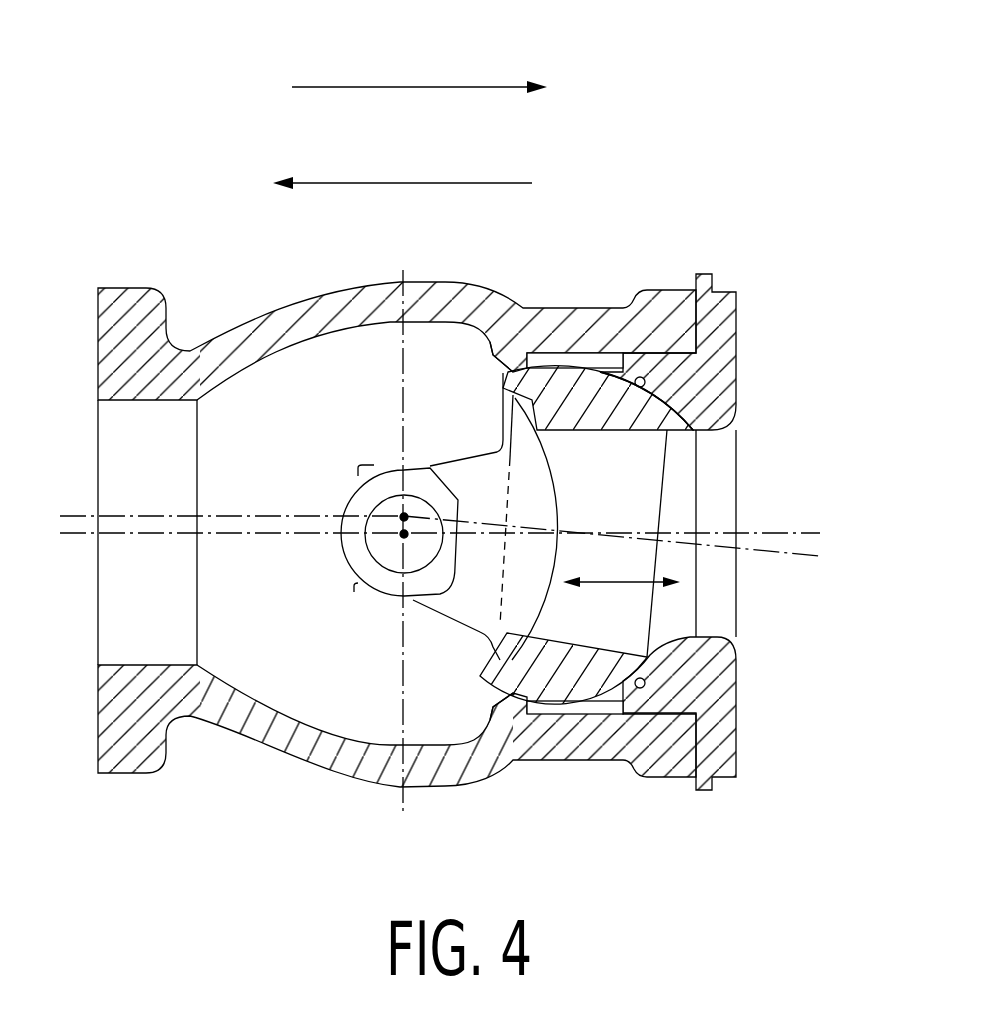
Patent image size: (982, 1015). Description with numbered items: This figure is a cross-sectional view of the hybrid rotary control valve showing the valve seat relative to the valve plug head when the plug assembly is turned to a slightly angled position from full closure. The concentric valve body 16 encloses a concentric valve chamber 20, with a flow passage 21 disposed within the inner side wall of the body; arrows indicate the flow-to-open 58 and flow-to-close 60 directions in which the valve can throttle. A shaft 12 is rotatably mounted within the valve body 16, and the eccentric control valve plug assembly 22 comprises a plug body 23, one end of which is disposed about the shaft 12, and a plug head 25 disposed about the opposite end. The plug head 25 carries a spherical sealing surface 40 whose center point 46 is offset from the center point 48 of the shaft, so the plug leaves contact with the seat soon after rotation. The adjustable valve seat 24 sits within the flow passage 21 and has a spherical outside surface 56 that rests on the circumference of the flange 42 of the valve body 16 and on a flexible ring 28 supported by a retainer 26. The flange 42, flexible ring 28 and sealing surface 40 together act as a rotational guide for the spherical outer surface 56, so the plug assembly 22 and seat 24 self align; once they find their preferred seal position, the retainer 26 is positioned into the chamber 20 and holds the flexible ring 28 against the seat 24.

The shaft 12 is at (372, 548).
The concentric valve body 16 is at (290, 318).
The concentric valve chamber 20 is at (304, 445).
The flow passage 21 is at (634, 586).
The eccentric control valve plug assembly 22 is at (450, 612).
The plug body 23 is at (392, 596).
The adjustable valve seat 24 is at (570, 675).
The plug head 25 is at (542, 468).
The retainer 26 is at (737, 310).
The flexible ring 28 is at (648, 384).
The spherical sealing surface 40 is at (565, 498).
The flange 42 is at (510, 797).
The center point of the spherical sealing surface 46 is at (402, 514).
The center point of the shaft 48 is at (402, 537).
The spherical outside surface 56 is at (580, 368).
The flow-to-open direction 58 is at (428, 183).
The flow-to-close direction 60 is at (421, 87).